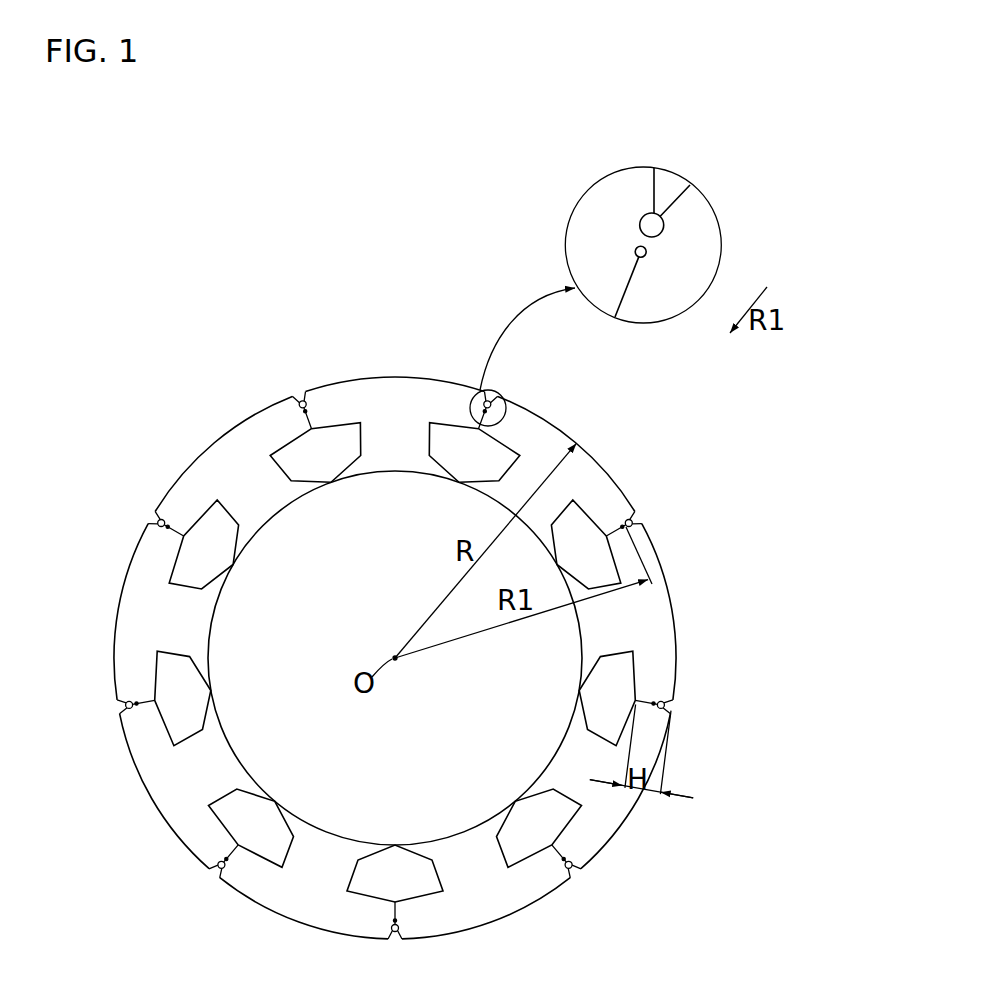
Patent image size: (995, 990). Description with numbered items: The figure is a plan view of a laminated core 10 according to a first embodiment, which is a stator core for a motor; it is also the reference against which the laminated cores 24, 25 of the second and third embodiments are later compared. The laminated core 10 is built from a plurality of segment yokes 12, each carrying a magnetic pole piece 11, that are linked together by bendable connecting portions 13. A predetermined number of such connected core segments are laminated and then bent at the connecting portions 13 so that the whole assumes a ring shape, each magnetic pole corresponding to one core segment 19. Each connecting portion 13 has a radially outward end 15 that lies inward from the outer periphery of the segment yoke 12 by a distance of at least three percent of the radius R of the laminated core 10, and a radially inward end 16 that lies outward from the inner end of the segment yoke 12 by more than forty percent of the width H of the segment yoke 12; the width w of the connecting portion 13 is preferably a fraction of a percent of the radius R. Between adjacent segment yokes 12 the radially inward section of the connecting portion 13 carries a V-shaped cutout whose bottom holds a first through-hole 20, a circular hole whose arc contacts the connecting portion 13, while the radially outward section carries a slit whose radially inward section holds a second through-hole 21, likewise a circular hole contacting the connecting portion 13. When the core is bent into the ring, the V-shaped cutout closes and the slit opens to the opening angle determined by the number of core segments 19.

The laminated core 10 is at (460, 529).
The laminated core 24 is at (460, 529).
The laminated core 25 is at (460, 529).
The magnetic pole piece 11 is at (388, 464).
The segment yoke 12 is at (393, 389).
The connecting portion 13 is at (767, 287).
The radially outward end 15 is at (647, 211).
The radially inward end 16 is at (642, 258).
The core segment 19 is at (188, 448).
The first through-hole 20 is at (635, 252).
The second through-hole 21 is at (664, 224).